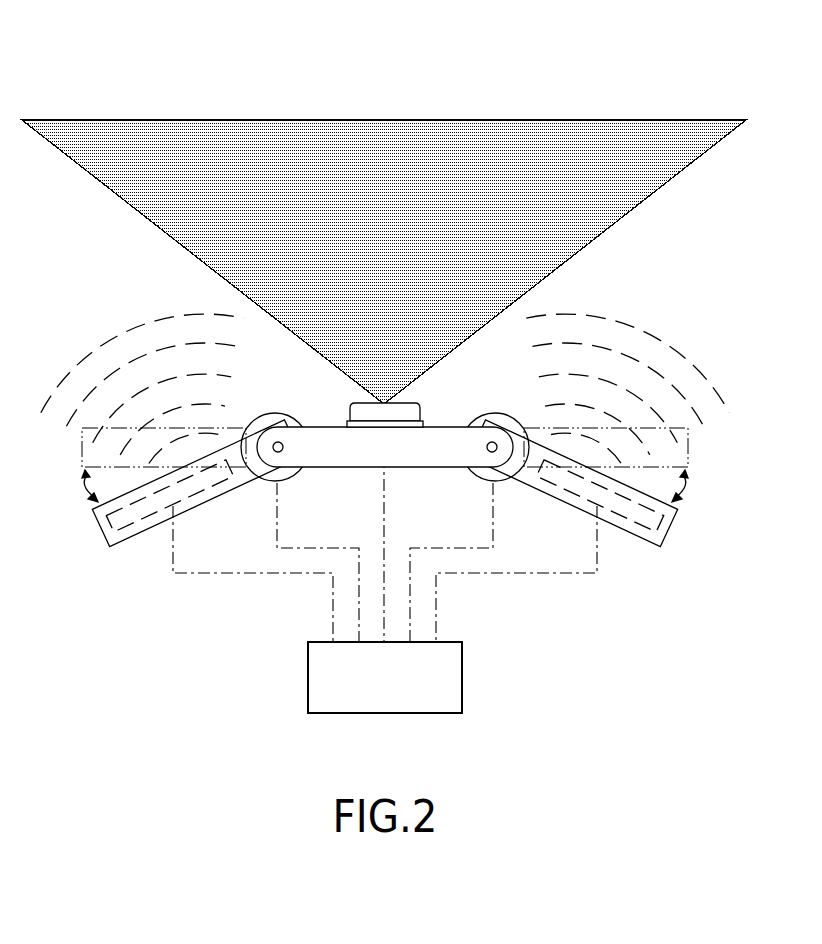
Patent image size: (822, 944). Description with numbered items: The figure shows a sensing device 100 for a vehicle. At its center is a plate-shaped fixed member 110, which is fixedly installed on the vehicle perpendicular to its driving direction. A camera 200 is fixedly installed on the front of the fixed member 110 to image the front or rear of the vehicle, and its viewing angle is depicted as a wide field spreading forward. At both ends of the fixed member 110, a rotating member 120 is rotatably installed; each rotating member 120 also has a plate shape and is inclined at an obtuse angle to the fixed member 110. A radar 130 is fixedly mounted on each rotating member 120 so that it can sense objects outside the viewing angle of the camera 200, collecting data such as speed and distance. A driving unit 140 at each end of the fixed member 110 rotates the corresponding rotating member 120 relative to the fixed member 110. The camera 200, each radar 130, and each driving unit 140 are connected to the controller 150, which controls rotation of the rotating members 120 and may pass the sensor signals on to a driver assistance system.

The sensing device 100 is at (243, 38).
The fixed member 110 is at (350, 463).
The rotating member 120 is at (115, 541).
The radar 130 is at (147, 509).
The driving unit 140 is at (502, 480).
The controller 150 is at (427, 713).
The camera 200 is at (356, 413).